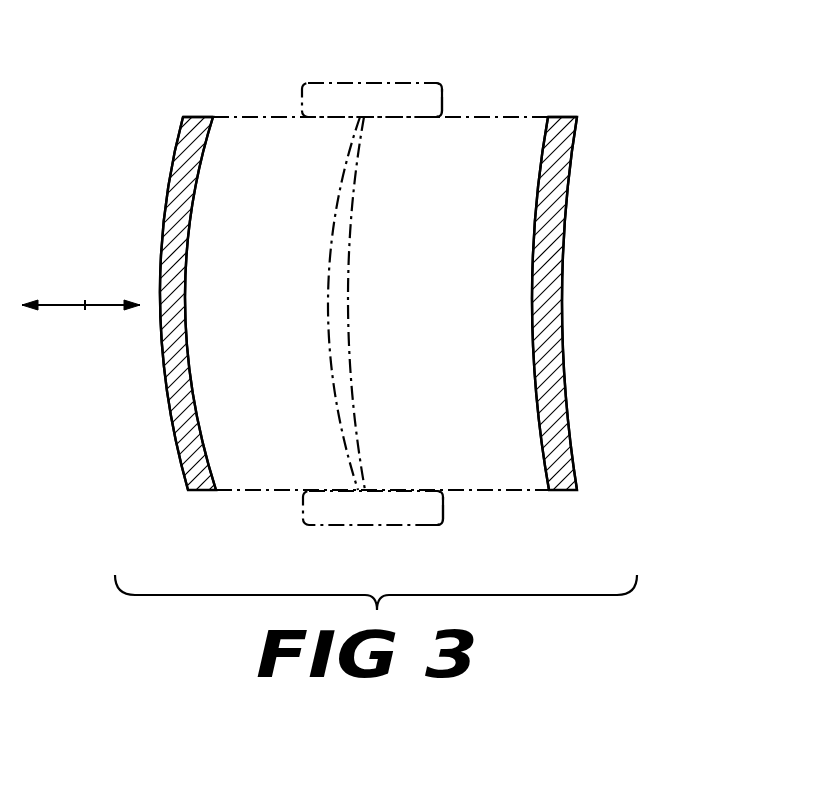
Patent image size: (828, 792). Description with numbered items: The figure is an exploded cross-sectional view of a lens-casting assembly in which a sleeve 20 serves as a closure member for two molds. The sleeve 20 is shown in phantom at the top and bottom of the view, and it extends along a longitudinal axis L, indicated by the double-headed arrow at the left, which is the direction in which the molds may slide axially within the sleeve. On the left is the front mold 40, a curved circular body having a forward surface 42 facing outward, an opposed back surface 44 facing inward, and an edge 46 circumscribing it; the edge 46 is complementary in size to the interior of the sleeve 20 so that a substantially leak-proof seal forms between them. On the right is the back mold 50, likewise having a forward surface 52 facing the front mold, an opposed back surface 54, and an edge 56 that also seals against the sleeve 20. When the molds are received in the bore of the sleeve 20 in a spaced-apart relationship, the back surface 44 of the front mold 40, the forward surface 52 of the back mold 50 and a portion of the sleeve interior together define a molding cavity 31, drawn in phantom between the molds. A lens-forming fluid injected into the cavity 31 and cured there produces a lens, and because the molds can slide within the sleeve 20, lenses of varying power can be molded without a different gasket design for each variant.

The sleeve 20 is at (355, 93).
The molding cavity 31 is at (347, 333).
The front mold 40 is at (162, 223).
The forward surface 42 is at (166, 393).
The back surface 44 is at (190, 375).
The edge 46 is at (215, 117).
The back mold 50 is at (543, 221).
The forward surface 52 is at (537, 410).
The back surface 54 is at (566, 400).
The edge 56 is at (566, 117).
The longitudinal axis L is at (87, 304).